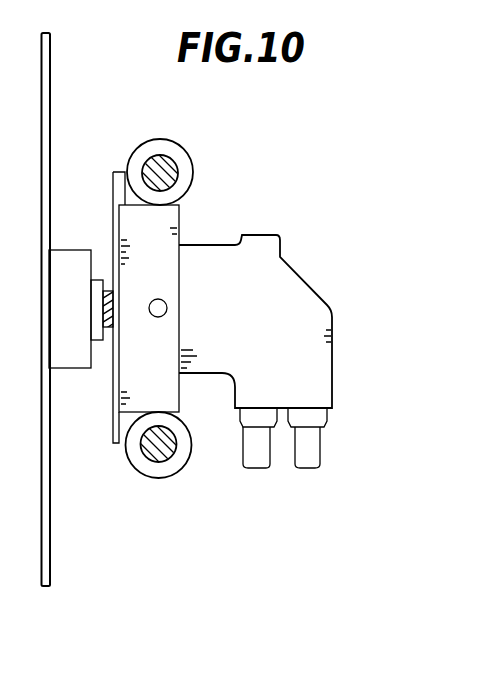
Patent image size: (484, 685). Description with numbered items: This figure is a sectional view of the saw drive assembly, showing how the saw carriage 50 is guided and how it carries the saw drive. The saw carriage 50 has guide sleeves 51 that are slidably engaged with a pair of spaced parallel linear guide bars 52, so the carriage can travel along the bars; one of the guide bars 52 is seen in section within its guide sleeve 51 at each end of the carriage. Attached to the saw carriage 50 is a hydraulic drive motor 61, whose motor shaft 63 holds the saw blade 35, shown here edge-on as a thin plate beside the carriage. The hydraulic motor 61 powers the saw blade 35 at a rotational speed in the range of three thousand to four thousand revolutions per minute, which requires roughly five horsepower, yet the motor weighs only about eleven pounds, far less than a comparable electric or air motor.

The saw blade 35 is at (50, 108).
The saw carriage 50 is at (168, 220).
The guide sleeves 51 is at (153, 140).
The linear guide bars 52 is at (167, 168).
The hydraulic drive motor 61 is at (313, 345).
The motor shaft 63 is at (112, 300).